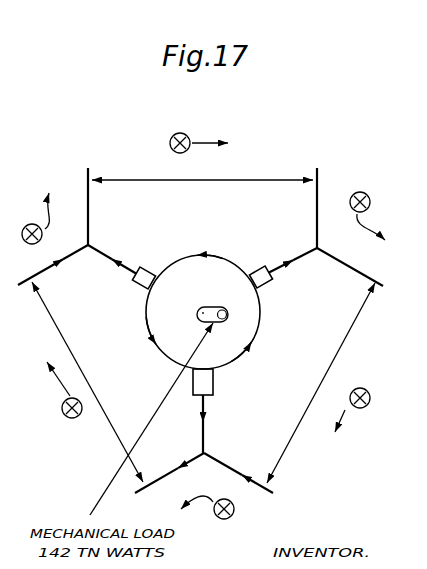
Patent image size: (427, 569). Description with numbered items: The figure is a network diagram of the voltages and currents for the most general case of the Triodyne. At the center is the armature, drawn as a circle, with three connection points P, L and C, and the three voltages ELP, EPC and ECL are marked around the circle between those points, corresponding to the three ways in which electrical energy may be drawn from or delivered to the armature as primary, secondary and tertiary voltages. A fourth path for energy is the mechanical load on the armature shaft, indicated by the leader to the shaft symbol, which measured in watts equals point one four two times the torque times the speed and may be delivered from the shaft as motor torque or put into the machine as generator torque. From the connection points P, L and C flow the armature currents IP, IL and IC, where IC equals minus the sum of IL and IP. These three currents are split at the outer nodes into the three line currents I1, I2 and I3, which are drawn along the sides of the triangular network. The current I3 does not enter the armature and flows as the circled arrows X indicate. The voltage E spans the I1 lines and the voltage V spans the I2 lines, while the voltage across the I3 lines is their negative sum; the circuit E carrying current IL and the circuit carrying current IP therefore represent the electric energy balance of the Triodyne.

The current I1 is at (294, 379).
The current I2 is at (111, 379).
The current I3 is at (204, 208).
The current IP is at (112, 270).
The current IL is at (293, 269).
The current IC is at (215, 424).
The phase winding P is at (147, 268).
The phase winding L is at (260, 268).
The phase winding C is at (211, 385).
The voltage between L and P ELP is at (204, 244).
The voltage between P and C EPC is at (133, 339).
The voltage between C and L ECL is at (264, 350).
The circuit E is at (321, 383).
The voltage V is at (87, 382).